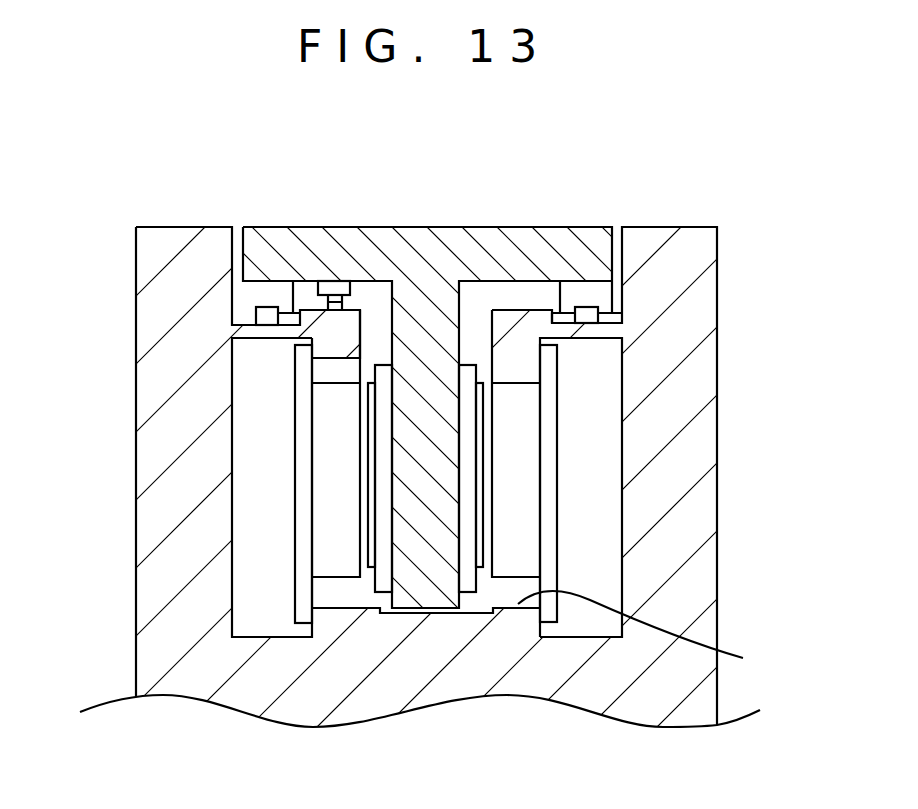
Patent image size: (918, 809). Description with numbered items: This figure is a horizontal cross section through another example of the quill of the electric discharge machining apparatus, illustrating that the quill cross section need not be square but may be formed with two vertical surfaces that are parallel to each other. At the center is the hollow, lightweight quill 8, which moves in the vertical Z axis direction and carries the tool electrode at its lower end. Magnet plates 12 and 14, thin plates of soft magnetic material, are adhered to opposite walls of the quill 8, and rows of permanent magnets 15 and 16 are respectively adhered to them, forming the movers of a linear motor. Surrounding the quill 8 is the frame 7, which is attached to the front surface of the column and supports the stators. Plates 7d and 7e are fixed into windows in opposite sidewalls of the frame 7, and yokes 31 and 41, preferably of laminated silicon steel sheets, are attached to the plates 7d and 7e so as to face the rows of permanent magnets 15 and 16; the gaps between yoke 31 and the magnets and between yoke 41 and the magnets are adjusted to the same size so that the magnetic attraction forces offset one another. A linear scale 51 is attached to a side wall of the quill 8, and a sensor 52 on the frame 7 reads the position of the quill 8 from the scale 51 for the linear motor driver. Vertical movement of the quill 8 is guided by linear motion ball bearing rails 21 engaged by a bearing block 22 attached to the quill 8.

The frame 7 is at (675, 600).
The plate 7d is at (303, 452).
The plate 7e is at (550, 435).
The quill 8 is at (425, 278).
The magnet plate 12 is at (383, 575).
The magnet plate 14 is at (468, 578).
The row of permanent magnets 15 is at (372, 567).
The row of permanent magnets 16 is at (480, 567).
The linear motion ball bearing rail 21 is at (582, 312).
The upper bearing block 22 is at (590, 288).
The yoke 31 is at (330, 505).
The yoke 41 is at (523, 505).
The linear scale 51 is at (322, 287).
The sensor 52 is at (340, 305).